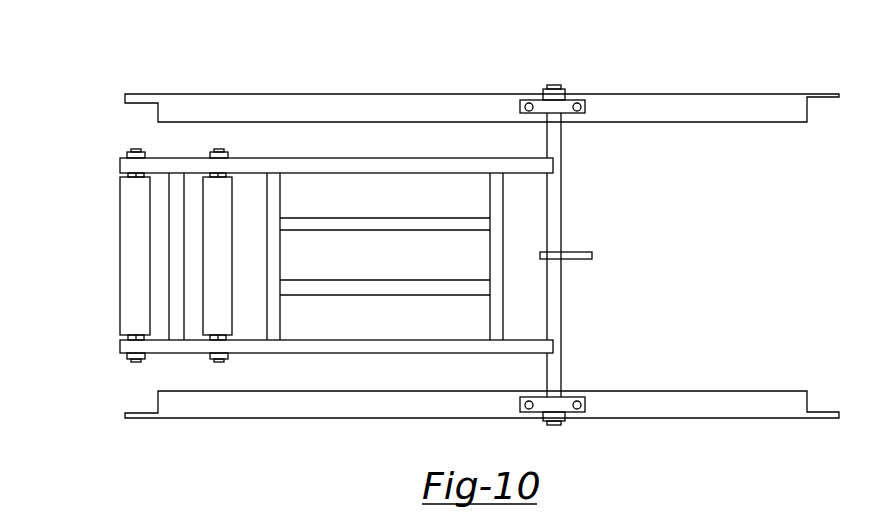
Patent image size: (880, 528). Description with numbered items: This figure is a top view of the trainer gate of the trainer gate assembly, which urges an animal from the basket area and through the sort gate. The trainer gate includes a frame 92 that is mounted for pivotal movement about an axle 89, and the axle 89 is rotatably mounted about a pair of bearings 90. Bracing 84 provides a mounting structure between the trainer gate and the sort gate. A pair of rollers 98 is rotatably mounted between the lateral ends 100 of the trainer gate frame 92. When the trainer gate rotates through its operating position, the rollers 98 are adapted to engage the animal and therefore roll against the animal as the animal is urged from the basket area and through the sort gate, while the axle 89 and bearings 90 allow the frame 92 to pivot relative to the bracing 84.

The bracing 84 is at (755, 122).
The axle 89 is at (547, 140).
The bearings 90 is at (572, 117).
The frame 92 is at (277, 353).
The rollers 98 is at (213, 256).
The lateral ends 100 is at (353, 158).